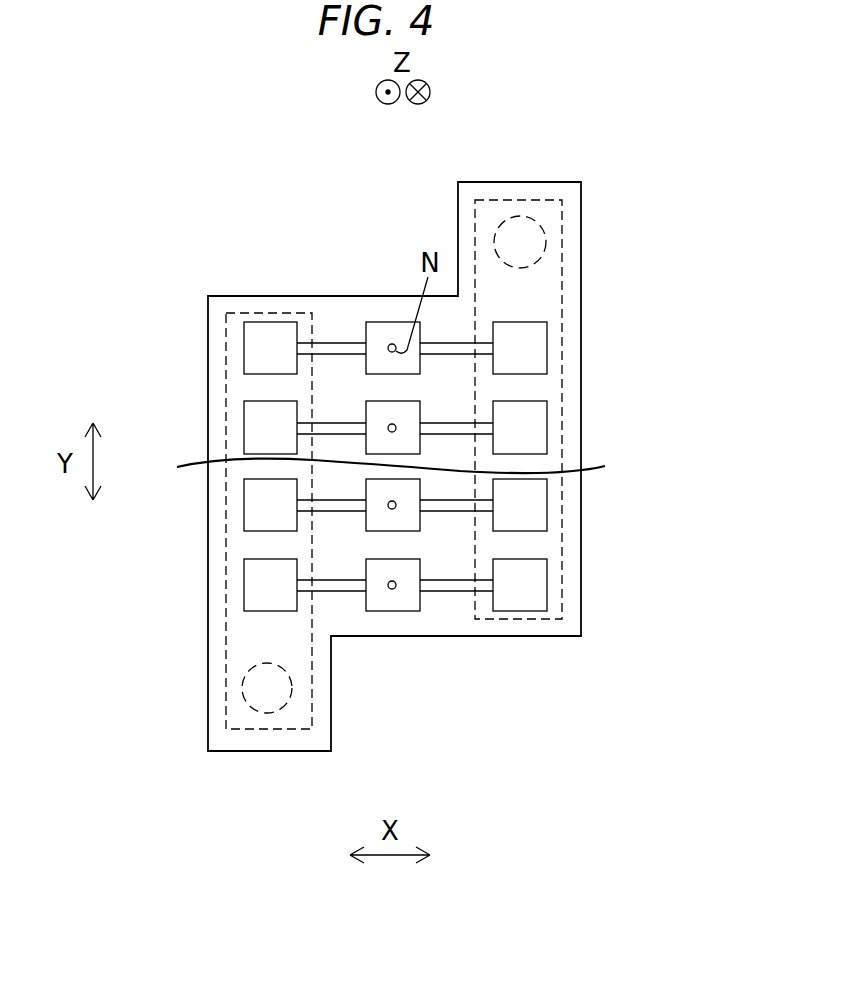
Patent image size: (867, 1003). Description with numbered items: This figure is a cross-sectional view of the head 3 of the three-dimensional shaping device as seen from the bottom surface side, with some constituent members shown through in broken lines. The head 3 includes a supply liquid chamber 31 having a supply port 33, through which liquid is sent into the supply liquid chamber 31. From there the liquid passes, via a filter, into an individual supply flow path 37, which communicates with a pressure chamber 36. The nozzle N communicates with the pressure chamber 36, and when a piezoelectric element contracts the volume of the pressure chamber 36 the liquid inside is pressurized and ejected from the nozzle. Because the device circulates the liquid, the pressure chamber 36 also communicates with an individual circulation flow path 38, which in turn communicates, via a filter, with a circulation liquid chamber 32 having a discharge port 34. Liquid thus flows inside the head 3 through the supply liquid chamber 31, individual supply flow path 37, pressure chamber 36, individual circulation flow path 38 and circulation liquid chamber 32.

The head 3 is at (640, 143).
The supply liquid chamber 31 is at (572, 250).
The circulation liquid chamber 32 is at (225, 670).
The supply port 33 is at (528, 215).
The discharge port 34 is at (262, 713).
The pressure chamber 36 is at (383, 323).
The individual supply flow path 37 is at (533, 322).
The individual circulation flow path 38 is at (272, 374).